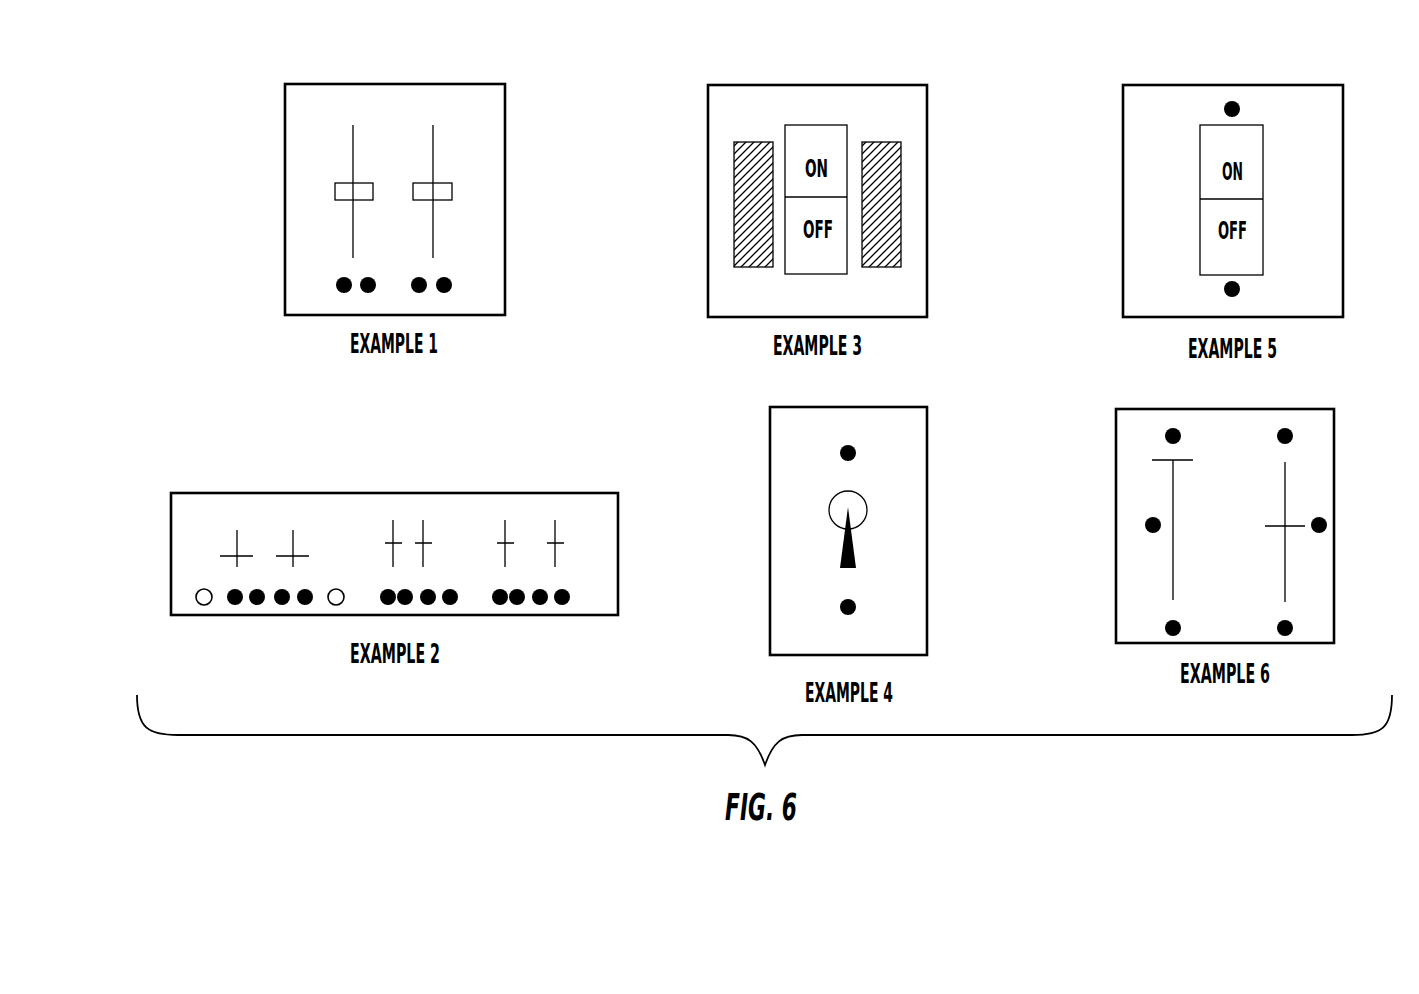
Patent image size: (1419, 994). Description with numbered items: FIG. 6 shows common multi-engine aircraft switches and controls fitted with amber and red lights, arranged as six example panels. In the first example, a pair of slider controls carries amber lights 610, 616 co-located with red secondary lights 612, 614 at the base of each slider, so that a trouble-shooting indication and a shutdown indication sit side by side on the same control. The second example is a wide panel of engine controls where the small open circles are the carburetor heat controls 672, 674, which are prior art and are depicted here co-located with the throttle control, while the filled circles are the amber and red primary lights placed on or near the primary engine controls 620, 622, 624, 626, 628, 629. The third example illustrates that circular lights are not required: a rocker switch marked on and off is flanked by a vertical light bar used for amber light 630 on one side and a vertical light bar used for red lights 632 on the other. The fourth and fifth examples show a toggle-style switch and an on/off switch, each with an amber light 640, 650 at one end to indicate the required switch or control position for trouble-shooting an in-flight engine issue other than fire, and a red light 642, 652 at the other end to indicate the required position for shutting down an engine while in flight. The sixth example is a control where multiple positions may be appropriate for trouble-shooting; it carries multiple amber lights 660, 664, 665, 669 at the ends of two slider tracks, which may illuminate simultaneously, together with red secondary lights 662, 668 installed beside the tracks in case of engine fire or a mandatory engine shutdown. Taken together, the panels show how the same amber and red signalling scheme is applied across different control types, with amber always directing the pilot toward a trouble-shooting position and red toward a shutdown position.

The amber light 610 is at (332, 280).
The red secondary light 612 is at (363, 297).
The red secondary light 614 is at (455, 285).
The amber light 616 is at (422, 294).
The primary engine control 620 is at (248, 607).
The primary engine control 622 is at (298, 607).
The primary engine control 624 is at (377, 602).
The primary engine control 626 is at (450, 607).
The primary engine control 628 is at (510, 607).
The primary engine control 629 is at (563, 607).
The amber light bar 630 is at (730, 193).
The red light bar 632 is at (908, 190).
The amber light 640 is at (832, 453).
The red light 642 is at (832, 607).
The amber light 650 is at (1213, 102).
The red light 652 is at (1252, 295).
The amber light 660 is at (1149, 438).
The red secondary light 662 is at (1143, 524).
The amber light 664 is at (1162, 627).
The amber light 665 is at (1298, 440).
The red secondary light 668 is at (1322, 536).
The amber light 669 is at (1298, 629).
The carburetor heat control 672 is at (203, 587).
The carburetor heat control 674 is at (337, 586).